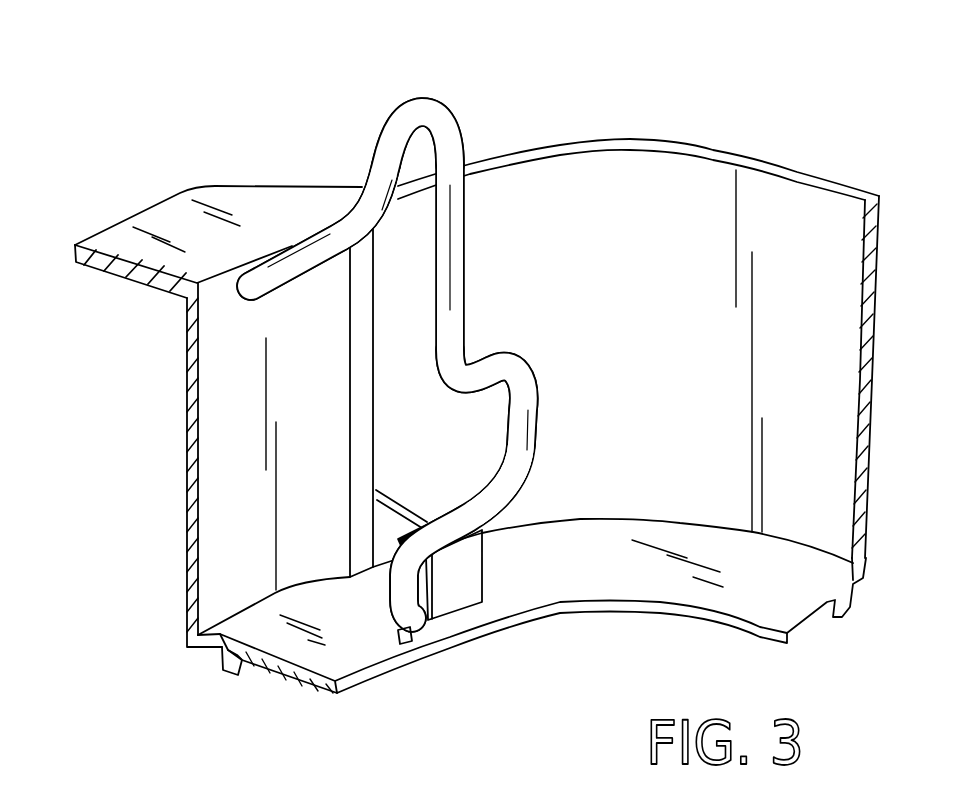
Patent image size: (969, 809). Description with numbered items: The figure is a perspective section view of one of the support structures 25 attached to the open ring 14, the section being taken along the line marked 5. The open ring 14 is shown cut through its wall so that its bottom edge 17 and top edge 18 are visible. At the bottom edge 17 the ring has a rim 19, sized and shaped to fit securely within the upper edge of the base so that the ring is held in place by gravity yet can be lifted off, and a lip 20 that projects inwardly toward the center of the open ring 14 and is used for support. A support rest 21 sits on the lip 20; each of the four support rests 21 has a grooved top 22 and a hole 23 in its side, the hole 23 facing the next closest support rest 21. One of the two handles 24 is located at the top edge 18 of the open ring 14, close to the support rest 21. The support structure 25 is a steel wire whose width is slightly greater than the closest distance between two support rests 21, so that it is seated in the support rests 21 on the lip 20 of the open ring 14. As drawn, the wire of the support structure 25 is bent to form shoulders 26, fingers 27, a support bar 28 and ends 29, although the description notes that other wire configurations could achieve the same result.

The open ring 14 is at (688, 344).
The bottom edge 17 is at (189, 648).
The top edge 18 is at (660, 150).
The rim 19 is at (237, 680).
The lip 20 is at (801, 595).
The support rest 21 is at (477, 600).
The grooved top 22 is at (386, 563).
The hole 23 is at (413, 640).
The handle 24 is at (168, 208).
The support structure 25 is at (465, 247).
The shoulders 26 is at (508, 349).
The fingers 27 is at (411, 118).
The support bar 28 is at (283, 264).
The ends 29 is at (392, 578).
The section line 5- 5 is at (290, 438).